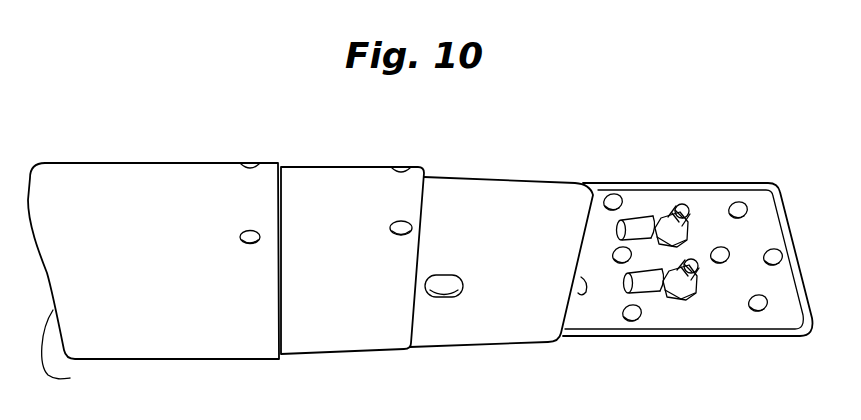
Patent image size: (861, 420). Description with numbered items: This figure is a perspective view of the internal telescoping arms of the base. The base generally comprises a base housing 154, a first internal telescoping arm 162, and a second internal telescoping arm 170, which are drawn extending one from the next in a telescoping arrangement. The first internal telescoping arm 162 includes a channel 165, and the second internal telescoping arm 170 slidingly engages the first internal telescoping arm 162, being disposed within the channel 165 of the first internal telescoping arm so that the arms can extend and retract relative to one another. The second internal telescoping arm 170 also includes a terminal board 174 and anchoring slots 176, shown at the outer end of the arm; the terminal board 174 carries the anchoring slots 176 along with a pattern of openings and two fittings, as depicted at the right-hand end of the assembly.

The base housing 154 is at (170, 170).
The channel 165 is at (75, 348).
The first internal telescoping arm 162 is at (345, 183).
The second internal telescoping arm 170 is at (537, 186).
The terminal board 174 is at (702, 198).
The anchoring slots 176 is at (668, 297).